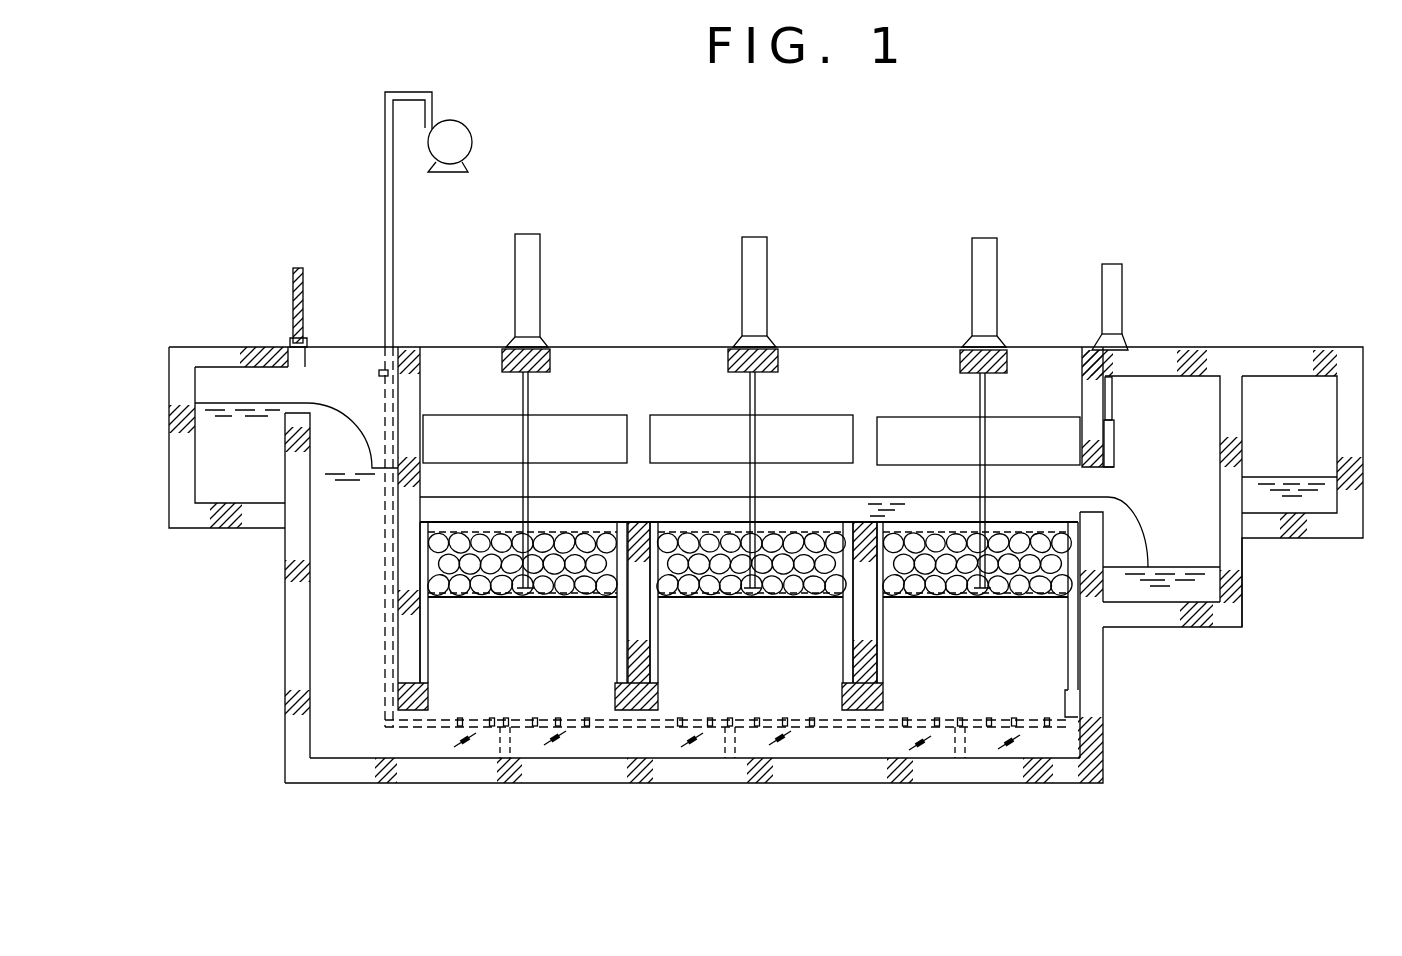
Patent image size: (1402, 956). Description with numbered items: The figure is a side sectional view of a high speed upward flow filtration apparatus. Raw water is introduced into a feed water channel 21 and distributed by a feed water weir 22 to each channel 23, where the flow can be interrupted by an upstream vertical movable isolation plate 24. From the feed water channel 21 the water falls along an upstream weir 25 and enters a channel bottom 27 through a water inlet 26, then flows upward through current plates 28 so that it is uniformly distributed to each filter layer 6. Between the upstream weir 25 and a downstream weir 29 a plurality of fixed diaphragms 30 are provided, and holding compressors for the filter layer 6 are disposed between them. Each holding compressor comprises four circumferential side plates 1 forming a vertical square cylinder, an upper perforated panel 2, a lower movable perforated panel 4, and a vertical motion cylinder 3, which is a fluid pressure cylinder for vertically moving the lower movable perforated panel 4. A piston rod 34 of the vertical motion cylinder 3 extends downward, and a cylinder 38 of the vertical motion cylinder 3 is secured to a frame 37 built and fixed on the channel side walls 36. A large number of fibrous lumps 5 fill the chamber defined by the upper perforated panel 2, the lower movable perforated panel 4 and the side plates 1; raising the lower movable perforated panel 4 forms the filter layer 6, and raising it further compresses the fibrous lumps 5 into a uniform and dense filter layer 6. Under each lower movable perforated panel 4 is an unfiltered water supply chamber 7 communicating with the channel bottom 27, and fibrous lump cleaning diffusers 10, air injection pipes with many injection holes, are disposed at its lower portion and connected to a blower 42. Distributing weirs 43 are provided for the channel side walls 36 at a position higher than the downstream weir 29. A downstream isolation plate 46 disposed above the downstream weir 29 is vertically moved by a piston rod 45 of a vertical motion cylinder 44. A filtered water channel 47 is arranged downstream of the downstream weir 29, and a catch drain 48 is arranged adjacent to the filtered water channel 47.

The circumferential side plate 1 is at (430, 663).
The upper perforated panel 2 is at (570, 545).
The vertical motion cylinder 3 is at (541, 266).
The lower movable perforated panel 4 is at (562, 600).
The fibrous lump 5 is at (472, 582).
The filter layer 6 is at (468, 555).
The unfiltered water supply chamber 7 is at (545, 665).
The fibrous lump cleaning diffuser 10 is at (684, 718).
The feed water channel 21 is at (215, 490).
The feed water weir 22 is at (295, 465).
The channel 23 is at (290, 746).
The upstream vertical movable isolation plate 24 is at (303, 288).
The upstream weir 25 is at (385, 643).
The water inlet 26 is at (400, 740).
The channel bottom 27 is at (562, 762).
The current plate 28 is at (462, 745).
The downstream weir 29 is at (1120, 530).
The fixed diaphragm 30 is at (636, 524).
The piston rod 34 is at (530, 387).
The channel side wall 36 is at (458, 358).
The frame 37 is at (552, 362).
The cylinder 38 is at (515, 262).
The blower 42 is at (472, 146).
The distributing weir 43 is at (565, 462).
The vertical motion cylinder 44 is at (1122, 300).
The piston rod 45 is at (1112, 405).
The downstream isolation plate 46 is at (1114, 450).
The filtered water channel 47 is at (1170, 595).
The catch drain 48 is at (1305, 500).